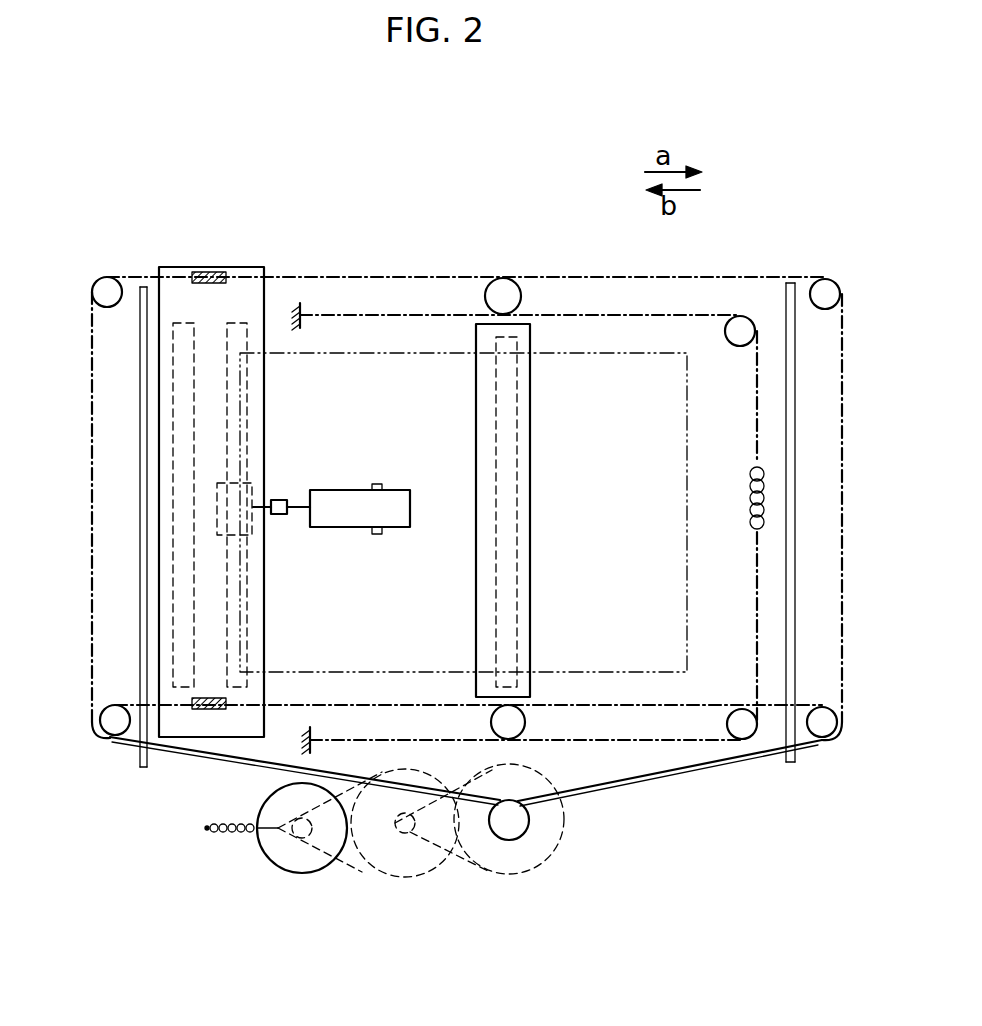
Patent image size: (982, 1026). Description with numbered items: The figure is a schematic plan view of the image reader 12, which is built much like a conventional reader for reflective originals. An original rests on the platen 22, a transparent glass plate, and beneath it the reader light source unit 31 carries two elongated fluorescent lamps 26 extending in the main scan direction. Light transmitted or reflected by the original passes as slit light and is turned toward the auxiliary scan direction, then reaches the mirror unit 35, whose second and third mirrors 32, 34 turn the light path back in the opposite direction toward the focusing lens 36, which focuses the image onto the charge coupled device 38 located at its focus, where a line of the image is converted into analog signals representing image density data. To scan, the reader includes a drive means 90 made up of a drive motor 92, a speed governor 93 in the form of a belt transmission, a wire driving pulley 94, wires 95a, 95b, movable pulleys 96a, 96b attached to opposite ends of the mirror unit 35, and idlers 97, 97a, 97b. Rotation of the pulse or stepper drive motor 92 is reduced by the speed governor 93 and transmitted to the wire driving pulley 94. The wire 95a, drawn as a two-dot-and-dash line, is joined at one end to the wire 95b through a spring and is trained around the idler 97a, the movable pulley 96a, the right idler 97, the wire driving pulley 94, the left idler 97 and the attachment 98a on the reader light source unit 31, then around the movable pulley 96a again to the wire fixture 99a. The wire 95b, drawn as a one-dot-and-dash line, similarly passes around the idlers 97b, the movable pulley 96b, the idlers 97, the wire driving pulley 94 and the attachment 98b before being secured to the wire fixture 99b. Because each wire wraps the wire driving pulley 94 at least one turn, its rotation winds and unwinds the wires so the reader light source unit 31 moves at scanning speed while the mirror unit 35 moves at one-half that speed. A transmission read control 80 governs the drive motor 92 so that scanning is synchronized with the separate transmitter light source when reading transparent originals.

The image reader 12 is at (558, 196).
The platen 22 is at (595, 350).
The fluorescent lamps 26 is at (227, 433).
The reader light source unit 31 is at (170, 287).
The second mirror 32 is at (518, 530).
The third mirror 34 is at (463, 512).
The mirror unit 35 is at (523, 442).
The focusing lens 36 is at (398, 528).
The charge coupled device 38 is at (280, 500).
The transmission read control 80 is at (302, 885).
The drive means 90 is at (732, 260).
The drive motor 92 is at (282, 855).
The speed governor 93 is at (466, 892).
The wire driving pulley 94 is at (517, 822).
The wire 95a is at (275, 775).
The wire 95b is at (384, 315).
The movable pulley 96a is at (514, 724).
The movable pulley 96b is at (503, 292).
The idler 97 is at (115, 725).
The idler 97a is at (742, 720).
The idler 97b is at (107, 290).
The attachment 98a is at (205, 710).
The attachment 98b is at (210, 272).
The wire fixture 99a is at (314, 727).
The wire fixture 99b is at (305, 300).